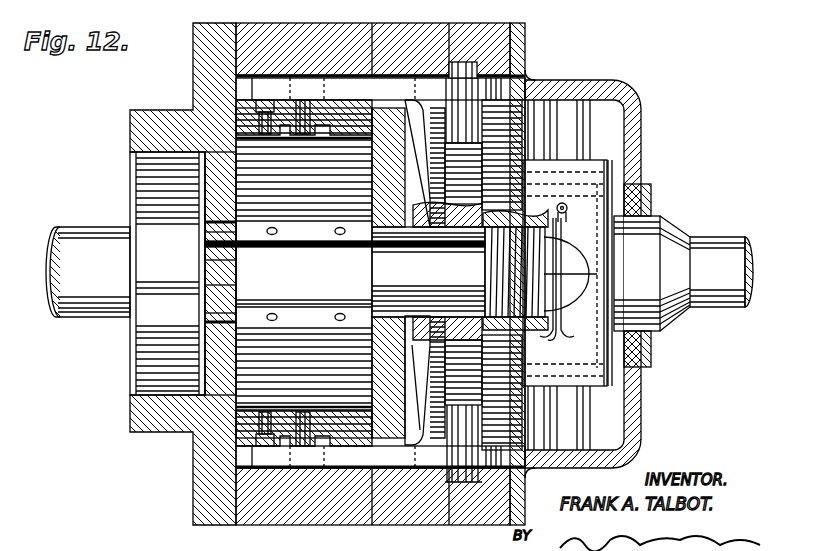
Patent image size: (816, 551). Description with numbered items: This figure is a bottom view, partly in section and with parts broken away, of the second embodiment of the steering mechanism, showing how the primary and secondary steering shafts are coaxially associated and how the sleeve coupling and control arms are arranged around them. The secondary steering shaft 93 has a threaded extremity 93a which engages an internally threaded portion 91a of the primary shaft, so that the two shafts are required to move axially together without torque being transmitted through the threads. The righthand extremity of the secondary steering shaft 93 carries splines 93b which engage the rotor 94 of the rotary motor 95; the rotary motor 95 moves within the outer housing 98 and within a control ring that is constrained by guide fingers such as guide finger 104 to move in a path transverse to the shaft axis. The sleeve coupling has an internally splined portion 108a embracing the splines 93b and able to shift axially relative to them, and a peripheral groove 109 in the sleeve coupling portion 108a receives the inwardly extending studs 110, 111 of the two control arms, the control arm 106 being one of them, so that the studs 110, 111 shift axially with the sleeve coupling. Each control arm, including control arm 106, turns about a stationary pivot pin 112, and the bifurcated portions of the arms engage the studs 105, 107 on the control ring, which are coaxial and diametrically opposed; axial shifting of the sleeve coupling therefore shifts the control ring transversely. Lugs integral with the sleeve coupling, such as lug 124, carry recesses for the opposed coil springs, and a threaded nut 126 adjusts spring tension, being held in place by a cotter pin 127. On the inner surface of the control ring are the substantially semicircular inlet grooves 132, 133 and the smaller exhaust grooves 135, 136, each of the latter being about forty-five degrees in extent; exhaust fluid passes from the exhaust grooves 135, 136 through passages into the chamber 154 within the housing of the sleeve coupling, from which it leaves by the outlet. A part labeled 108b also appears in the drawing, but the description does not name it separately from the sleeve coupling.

The rotary motor 95 is at (192, 72).
The outer housing 98 is at (259, 36).
The guide finger 104 is at (345, 470).
The control arm 106 is at (333, 77).
The exhaust groove 136 is at (270, 112).
The stud 105 is at (303, 106).
The exhaust groove 135 is at (345, 125).
The chamber 154 is at (410, 125).
The inlet groove 133 is at (380, 440).
The stud 107 is at (292, 432).
The inlet groove 132 is at (343, 420).
The stud 110 is at (460, 430).
The stationary pivot pin 112 is at (464, 60).
The stud 111 is at (583, 267).
The secondary steering shaft 93 is at (86, 318).
The rotor 94 is at (262, 206).
The splines 93b is at (420, 300).
The threaded extremity 93a is at (500, 270).
The peripheral groove 109 is at (470, 390).
The sleeve coupling portion 108a is at (466, 196).
The threaded nut 126 is at (568, 262).
The cotter pin 127 is at (568, 203).
The lug 124 is at (600, 282).
The internally threaded portion 91a is at (562, 324).
The bushing 108b is at (641, 186).